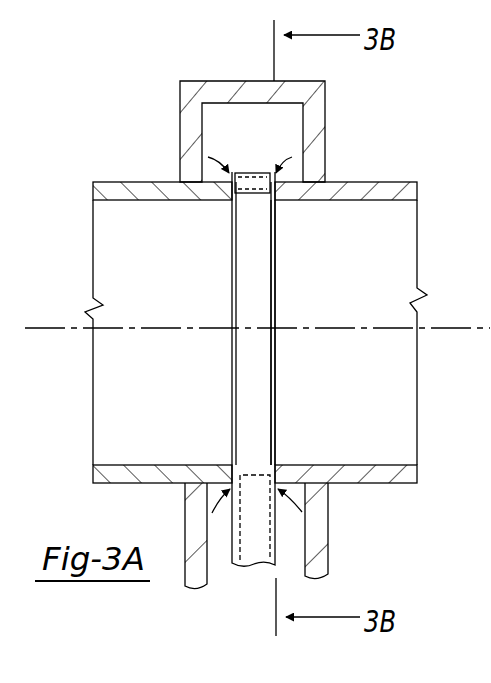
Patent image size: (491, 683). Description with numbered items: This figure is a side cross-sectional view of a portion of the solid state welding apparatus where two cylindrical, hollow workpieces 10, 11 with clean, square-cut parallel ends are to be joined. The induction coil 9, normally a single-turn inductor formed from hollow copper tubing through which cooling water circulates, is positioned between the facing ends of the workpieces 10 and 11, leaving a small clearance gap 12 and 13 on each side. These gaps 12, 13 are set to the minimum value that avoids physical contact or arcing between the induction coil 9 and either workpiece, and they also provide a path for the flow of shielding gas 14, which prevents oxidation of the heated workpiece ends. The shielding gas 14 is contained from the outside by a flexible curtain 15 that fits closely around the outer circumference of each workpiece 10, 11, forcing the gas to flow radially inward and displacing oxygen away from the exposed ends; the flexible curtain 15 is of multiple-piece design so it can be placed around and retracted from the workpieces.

The induction coil 9 is at (260, 172).
The workpiece 10 is at (130, 182).
The workpiece 11 is at (372, 182).
The clearance gap 12 is at (262, 253).
The clearance gap 13 is at (240, 286).
The shielding gas 14 is at (285, 153).
The flexible curtain 15 is at (180, 106).